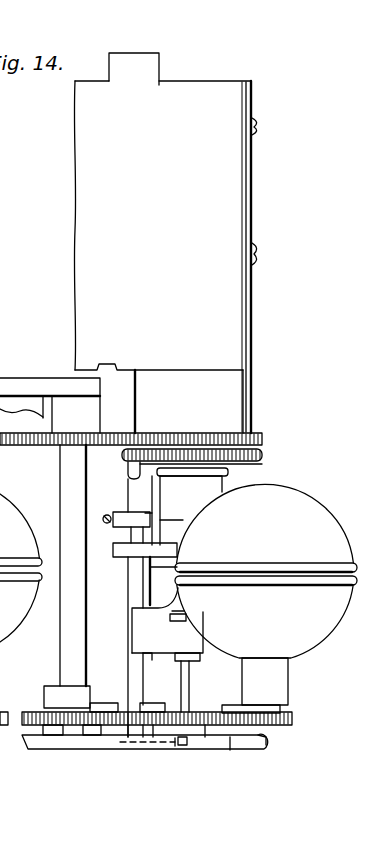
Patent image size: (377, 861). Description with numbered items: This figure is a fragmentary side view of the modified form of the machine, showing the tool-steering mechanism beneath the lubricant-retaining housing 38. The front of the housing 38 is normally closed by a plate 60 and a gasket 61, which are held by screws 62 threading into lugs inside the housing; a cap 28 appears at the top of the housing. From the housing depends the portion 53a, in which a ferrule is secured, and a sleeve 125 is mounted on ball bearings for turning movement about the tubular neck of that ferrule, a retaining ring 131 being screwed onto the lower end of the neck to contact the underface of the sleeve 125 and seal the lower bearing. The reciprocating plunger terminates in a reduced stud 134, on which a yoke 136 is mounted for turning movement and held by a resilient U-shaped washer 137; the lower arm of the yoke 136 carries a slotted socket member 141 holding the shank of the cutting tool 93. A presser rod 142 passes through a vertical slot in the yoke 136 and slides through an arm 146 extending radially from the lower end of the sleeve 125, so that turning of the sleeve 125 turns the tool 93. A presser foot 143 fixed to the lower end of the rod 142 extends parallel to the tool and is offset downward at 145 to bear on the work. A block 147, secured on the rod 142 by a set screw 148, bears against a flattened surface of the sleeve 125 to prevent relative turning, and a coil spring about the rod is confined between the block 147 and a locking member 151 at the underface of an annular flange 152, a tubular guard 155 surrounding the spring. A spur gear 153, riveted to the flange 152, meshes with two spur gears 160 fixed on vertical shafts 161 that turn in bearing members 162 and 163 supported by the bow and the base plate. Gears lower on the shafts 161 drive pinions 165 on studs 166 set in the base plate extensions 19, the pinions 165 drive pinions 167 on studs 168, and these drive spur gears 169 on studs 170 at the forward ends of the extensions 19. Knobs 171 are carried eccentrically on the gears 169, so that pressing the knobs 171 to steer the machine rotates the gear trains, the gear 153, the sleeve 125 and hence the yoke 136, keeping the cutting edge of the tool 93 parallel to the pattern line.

The extensions of base plate 19 is at (258, 751).
The cap 28 is at (153, 68).
The housing 38 is at (217, 311).
The depending portion of housing 53a is at (233, 392).
The plate 60 is at (254, 158).
The gasket 61 is at (244, 189).
The screws 62 is at (258, 130).
The cutting tool 93 is at (184, 697).
The sleeve 125 is at (200, 497).
The retaining ring 131 is at (160, 567).
The stud 134 is at (178, 621).
The yoke 136 is at (150, 658).
The washer 137 is at (180, 620).
The socket member 141 is at (189, 661).
The presser rod 142 is at (128, 600).
The presser foot 143 is at (207, 730).
The downward offset of presser foot 145 is at (173, 757).
The arm 146 is at (137, 584).
The block 147 is at (125, 548).
The set screw 148 is at (103, 519).
The locking member 151 is at (233, 472).
The annular flange 152 is at (263, 454).
The spur gear 153 is at (263, 440).
The tubular guard 155 is at (128, 492).
The spur gears 160 is at (63, 726).
The vertical shafts 161 is at (77, 482).
The bearing member 162 is at (72, 413).
The bearing member 163 is at (43, 735).
The pinions 165 is at (105, 727).
The studs 166 is at (103, 703).
The pinions 167 is at (153, 727).
The studs 168 is at (150, 703).
The spur gears 169 is at (237, 753).
The studs 170 is at (233, 707).
The knobs 171 is at (305, 510).